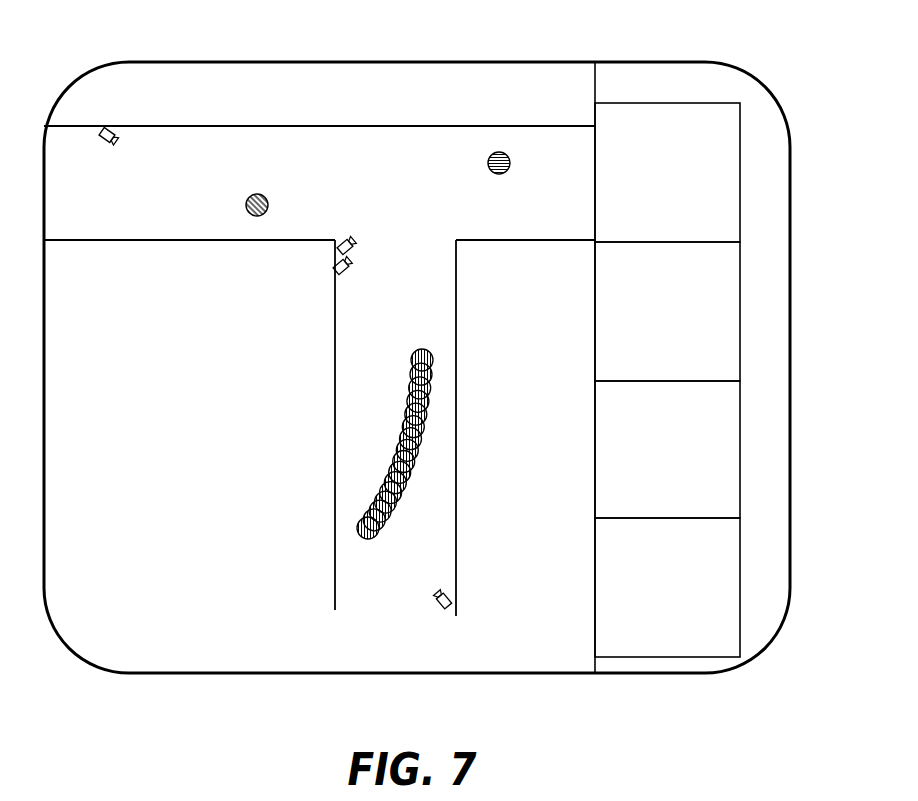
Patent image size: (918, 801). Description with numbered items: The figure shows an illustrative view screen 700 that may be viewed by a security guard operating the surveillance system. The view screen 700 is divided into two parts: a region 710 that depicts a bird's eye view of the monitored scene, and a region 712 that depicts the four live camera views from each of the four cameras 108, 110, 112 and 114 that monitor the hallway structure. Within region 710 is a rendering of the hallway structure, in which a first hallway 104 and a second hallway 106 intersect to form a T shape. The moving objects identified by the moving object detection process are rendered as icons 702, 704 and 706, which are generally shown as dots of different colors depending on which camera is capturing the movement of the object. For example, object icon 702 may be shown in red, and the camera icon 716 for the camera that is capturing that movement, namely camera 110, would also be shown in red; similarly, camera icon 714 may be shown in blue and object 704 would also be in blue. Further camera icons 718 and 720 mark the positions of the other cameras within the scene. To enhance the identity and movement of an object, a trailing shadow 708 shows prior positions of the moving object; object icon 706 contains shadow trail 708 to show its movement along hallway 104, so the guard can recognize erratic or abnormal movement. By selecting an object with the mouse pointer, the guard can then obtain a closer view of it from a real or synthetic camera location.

The view screen 700 is at (426, 728).
The object icon 702 is at (494, 175).
The object icon 704 is at (267, 194).
The object icon 706 is at (428, 354).
The trailing shadow 708 is at (418, 448).
The region 710 is at (342, 88).
The region 712 is at (655, 85).
The camera icon 714 is at (111, 127).
The camera icon 716 is at (332, 246).
The camera 718 is at (333, 272).
The camera 720 is at (452, 596).
The first hallway 104 is at (353, 459).
The second hallway 106 is at (137, 228).
The camera 108 is at (690, 194).
The camera 110 is at (690, 334).
The camera 112 is at (690, 473).
The camera 114 is at (690, 610).